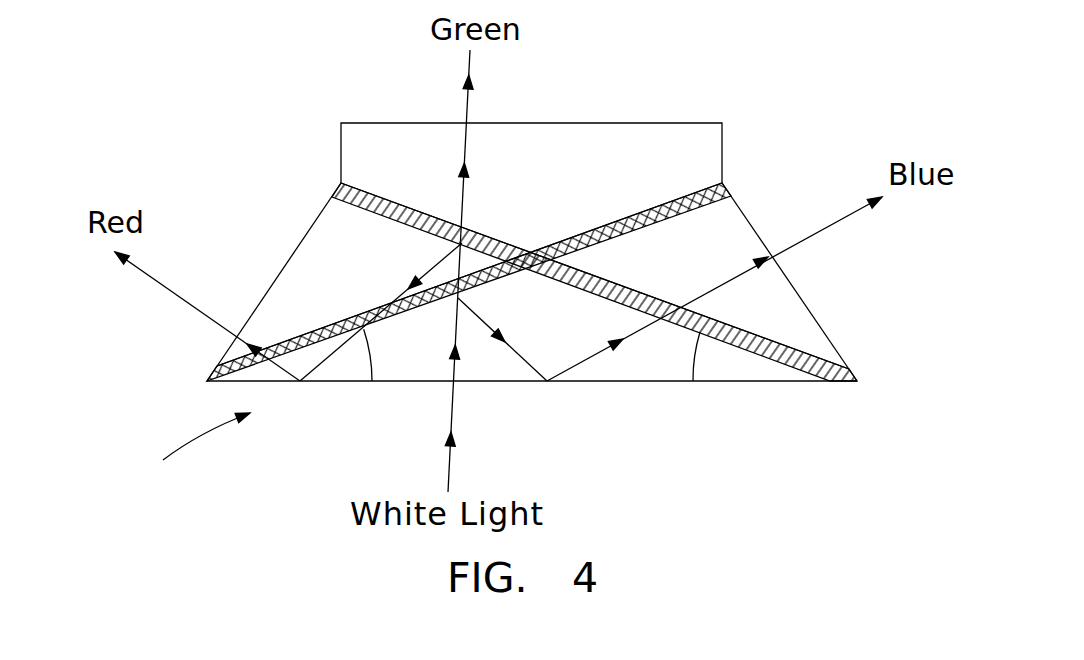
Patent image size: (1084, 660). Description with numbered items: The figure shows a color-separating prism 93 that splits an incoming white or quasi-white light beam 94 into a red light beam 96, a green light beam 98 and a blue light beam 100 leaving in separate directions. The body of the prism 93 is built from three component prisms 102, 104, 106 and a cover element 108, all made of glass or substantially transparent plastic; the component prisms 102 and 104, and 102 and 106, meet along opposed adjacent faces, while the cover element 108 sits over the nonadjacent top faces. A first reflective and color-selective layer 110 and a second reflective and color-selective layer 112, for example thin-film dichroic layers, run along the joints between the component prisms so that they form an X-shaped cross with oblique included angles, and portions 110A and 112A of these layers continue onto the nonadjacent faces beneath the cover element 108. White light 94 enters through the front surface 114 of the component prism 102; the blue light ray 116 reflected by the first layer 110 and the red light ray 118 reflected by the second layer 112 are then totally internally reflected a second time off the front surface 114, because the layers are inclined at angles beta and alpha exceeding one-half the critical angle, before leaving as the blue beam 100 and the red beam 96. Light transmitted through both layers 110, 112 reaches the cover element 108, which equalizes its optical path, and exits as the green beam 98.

The prism 93 is at (182, 451).
The incoming white light beam 94 is at (452, 462).
The red light beam 96 is at (170, 288).
The green light beam 98 is at (470, 103).
The blue light beam 100 is at (827, 228).
The component prism 102 is at (583, 335).
The component prism 104 is at (352, 271).
The component prism 106 is at (787, 308).
The cover element 108 is at (615, 190).
The first reflective and color-selective layer 110 is at (667, 206).
The portion of first reflective layer 110A is at (604, 227).
The second reflective and color-selective layer 112 is at (411, 206).
The portion of second reflective layer 112A is at (477, 232).
The front surface 114 is at (580, 382).
The reflected blue light ray 116 is at (520, 360).
The reflected red light ray 118 is at (413, 280).